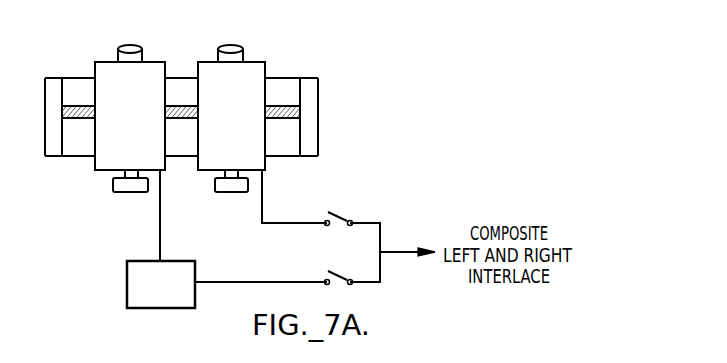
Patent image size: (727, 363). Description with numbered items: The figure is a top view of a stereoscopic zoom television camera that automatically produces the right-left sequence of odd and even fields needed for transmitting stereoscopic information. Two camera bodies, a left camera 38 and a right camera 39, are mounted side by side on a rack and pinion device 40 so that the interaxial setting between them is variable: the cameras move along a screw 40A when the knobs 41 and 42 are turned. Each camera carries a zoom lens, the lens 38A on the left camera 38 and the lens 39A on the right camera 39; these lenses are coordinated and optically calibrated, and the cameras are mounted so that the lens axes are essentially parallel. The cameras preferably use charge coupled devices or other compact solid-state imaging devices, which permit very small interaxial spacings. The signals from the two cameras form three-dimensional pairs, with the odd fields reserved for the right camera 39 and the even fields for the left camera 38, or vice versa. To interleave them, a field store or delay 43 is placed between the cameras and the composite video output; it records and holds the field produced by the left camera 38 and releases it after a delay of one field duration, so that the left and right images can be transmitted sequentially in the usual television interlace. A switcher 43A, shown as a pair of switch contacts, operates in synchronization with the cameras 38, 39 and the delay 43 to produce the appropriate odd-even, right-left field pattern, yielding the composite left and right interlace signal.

The left camera 38 is at (152, 78).
The zoom lens 38A is at (138, 47).
The right camera 39 is at (252, 88).
The zoom lens 39A is at (242, 47).
The rack and pinion device 40 is at (313, 92).
The screw 40A is at (298, 112).
The knob 41 is at (113, 183).
The knob 42 is at (215, 183).
The delay 43 is at (127, 285).
The switcher 43A is at (342, 217).